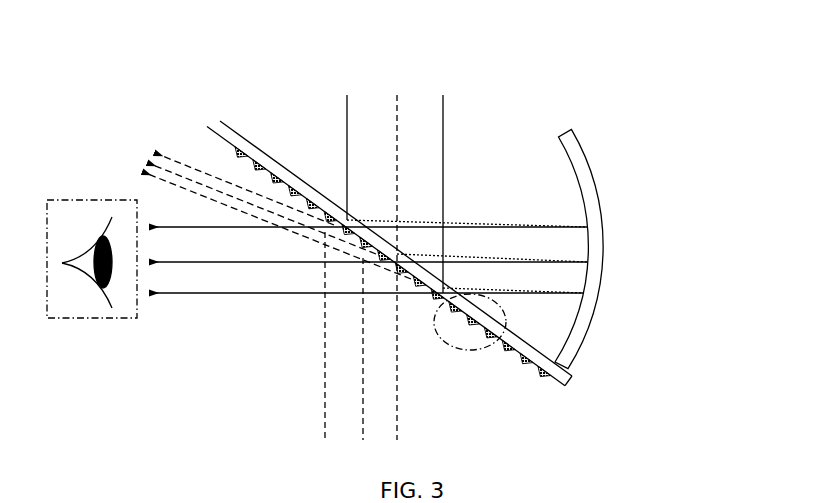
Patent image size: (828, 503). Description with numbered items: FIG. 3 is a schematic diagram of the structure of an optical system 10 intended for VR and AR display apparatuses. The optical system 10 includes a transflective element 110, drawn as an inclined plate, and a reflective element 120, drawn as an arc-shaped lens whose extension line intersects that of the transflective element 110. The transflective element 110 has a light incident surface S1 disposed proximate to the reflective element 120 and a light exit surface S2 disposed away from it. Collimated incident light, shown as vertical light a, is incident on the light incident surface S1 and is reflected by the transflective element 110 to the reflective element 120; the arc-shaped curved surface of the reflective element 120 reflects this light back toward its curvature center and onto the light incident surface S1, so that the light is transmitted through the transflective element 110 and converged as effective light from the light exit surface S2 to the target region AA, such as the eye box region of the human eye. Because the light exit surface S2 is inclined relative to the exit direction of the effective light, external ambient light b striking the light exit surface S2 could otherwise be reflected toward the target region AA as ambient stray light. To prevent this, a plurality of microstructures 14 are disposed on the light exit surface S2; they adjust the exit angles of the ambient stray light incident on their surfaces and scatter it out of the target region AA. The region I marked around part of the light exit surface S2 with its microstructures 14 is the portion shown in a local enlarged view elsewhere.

The optical system 10 is at (104, 58).
The transflective element 110 is at (421, 254).
The reflective element 120 is at (596, 203).
The microstructures 14 is at (507, 355).
The region I is at (455, 346).
The target region AA is at (85, 318).
The light incident surface S1 is at (386, 244).
The light exit surface S2 is at (375, 256).
The vertical light a is at (405, 194).
The ambient light b is at (351, 267).